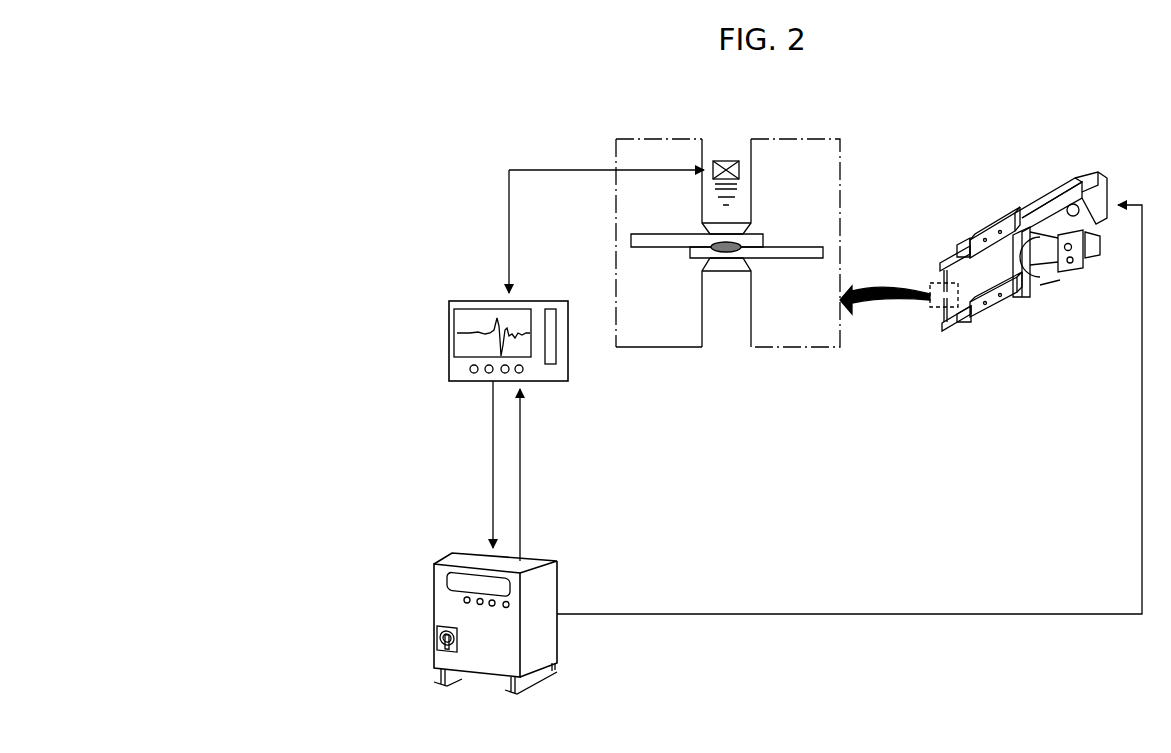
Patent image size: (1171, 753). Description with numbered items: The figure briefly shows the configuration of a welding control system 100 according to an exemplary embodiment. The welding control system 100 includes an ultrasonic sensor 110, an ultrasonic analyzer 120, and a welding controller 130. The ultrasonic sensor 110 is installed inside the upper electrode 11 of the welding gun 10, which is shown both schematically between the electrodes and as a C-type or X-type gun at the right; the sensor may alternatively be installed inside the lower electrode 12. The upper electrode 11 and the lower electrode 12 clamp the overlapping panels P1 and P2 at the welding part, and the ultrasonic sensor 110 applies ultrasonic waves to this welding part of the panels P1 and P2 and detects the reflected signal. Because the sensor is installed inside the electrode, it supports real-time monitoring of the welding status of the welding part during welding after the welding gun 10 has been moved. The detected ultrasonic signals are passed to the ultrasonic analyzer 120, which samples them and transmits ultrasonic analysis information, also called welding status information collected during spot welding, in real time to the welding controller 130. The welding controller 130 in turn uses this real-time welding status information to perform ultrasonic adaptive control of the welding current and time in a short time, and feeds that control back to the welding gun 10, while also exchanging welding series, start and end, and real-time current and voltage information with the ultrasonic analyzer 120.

The welding control system 100 is at (386, 184).
The ultrasonic sensor 110 is at (724, 158).
The upper electrode 11 is at (751, 207).
The lower electrode 12 is at (702, 318).
The panel P1 is at (647, 234).
The panel P2 is at (800, 258).
The ultrasonic analyzer 120 is at (449, 305).
The welding controller 130 is at (434, 603).
The welding gun 10 is at (1038, 298).